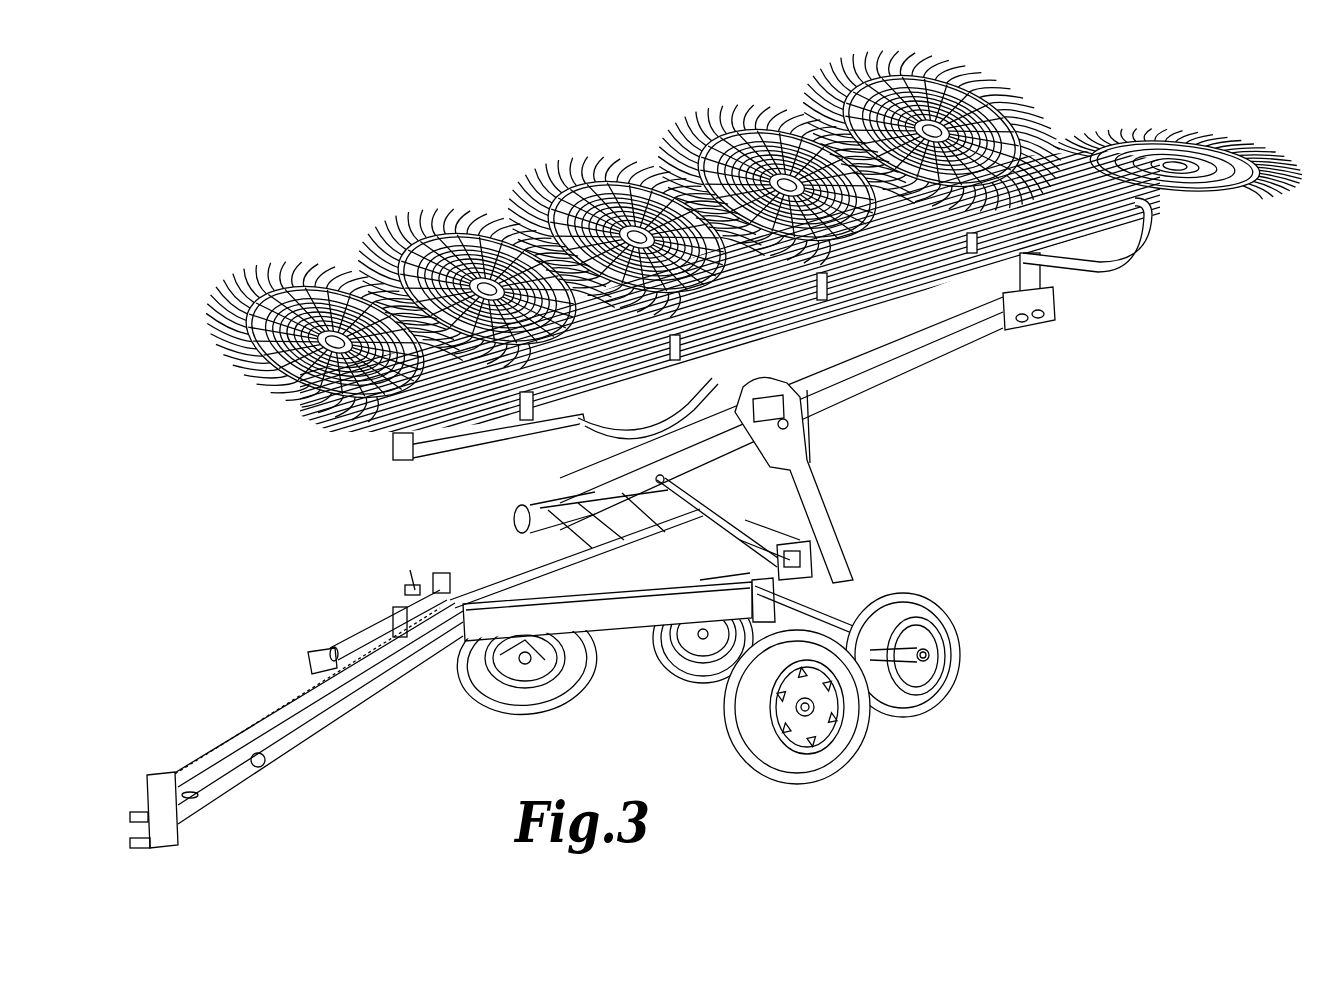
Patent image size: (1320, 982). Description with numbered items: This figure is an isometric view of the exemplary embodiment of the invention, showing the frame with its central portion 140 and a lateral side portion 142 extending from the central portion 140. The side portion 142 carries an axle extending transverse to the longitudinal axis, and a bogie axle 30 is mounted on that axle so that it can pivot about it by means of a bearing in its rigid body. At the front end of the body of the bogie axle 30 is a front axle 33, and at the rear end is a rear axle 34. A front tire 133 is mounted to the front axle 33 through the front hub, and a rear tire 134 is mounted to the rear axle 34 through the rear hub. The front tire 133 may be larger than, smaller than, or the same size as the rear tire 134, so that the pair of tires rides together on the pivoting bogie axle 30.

The bogie axle 30 is at (895, 690).
The front axle 33 is at (503, 657).
The rear axle 34 is at (933, 647).
The front tire 133 is at (565, 677).
The rear tire 134 is at (690, 663).
The central portion 140 is at (530, 587).
The lateral side portion 142 is at (790, 622).